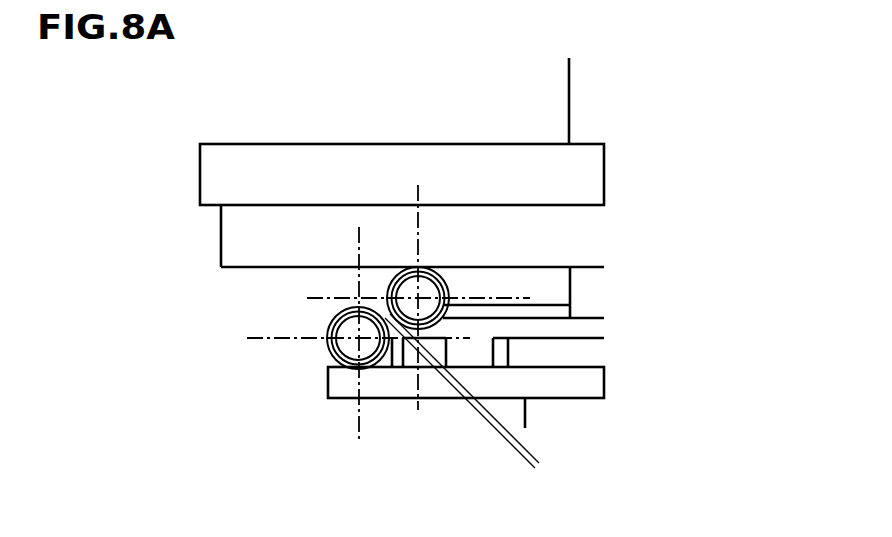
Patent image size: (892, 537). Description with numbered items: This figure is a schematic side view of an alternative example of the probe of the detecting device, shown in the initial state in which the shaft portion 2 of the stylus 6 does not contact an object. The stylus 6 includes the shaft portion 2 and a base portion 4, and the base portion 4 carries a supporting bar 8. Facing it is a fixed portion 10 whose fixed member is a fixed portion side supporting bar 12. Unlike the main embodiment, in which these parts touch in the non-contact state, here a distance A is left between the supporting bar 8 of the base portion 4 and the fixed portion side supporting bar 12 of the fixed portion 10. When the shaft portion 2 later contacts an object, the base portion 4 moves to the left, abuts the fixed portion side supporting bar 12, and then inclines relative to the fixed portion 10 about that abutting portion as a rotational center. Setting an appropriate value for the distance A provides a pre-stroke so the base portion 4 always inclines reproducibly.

The shaft portion 2 is at (586, 117).
The base portion 4 is at (563, 385).
The stylus 6 is at (715, 192).
The supporting bar 8 is at (340, 358).
The fixed portion 10 is at (272, 220).
The fixed portion side supporting bar 12 is at (395, 290).
The distance A is at (567, 437).